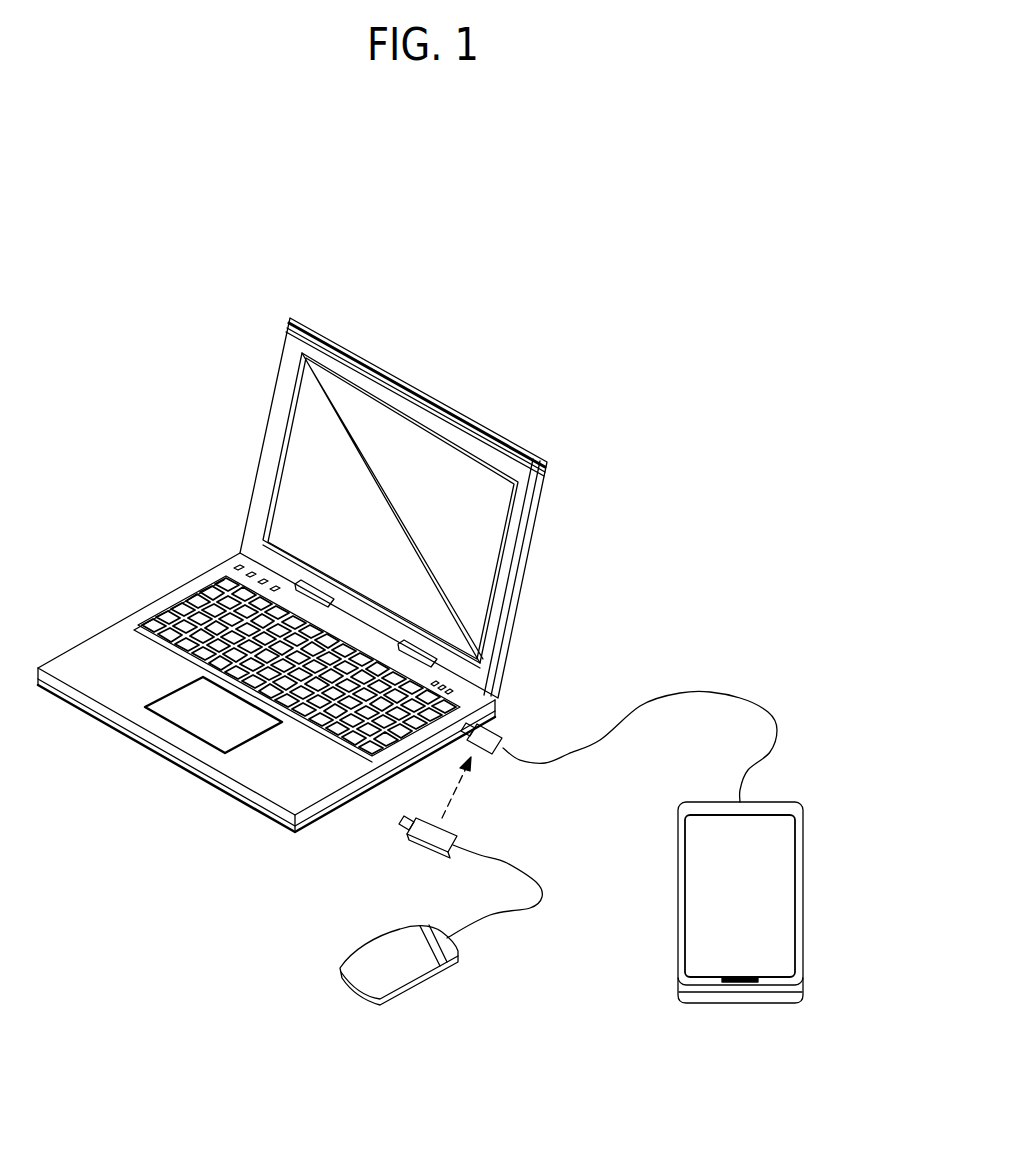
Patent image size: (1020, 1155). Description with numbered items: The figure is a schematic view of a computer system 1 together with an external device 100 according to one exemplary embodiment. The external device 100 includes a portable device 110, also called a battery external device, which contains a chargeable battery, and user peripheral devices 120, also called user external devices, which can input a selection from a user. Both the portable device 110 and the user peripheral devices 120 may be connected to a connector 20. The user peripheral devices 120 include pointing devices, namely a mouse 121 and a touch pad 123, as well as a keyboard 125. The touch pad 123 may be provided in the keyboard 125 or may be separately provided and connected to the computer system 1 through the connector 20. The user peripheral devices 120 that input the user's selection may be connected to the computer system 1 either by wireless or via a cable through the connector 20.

The computer system 1 is at (470, 372).
The connector 20 is at (492, 712).
The external device 100 is at (610, 1035).
The portable device 110 is at (680, 977).
The user peripheral devices 120 is at (275, 994).
The mouse 121 is at (340, 969).
The touch pad 123 is at (210, 722).
The keyboard 125 is at (347, 717).